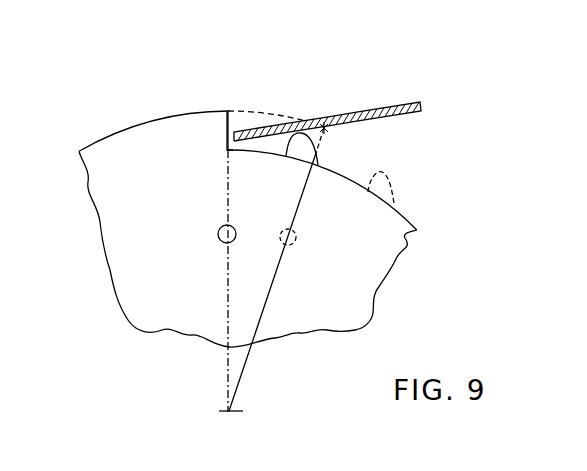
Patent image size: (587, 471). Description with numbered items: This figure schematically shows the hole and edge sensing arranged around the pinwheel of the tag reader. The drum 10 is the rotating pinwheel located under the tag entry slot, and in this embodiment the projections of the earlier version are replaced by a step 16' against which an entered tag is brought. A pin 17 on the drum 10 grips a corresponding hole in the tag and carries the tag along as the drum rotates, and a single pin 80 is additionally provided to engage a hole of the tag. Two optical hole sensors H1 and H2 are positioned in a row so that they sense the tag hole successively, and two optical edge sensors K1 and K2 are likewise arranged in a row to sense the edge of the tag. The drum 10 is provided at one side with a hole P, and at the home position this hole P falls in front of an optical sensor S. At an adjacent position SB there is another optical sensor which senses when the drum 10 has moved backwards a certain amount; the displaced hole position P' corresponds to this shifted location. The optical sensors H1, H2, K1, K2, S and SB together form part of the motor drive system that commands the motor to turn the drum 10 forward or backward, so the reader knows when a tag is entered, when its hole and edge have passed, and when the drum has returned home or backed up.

The drum 10 is at (103, 139).
The step 16' is at (238, 117).
The pin 17 is at (309, 145).
The pin 80 is at (391, 182).
The edge sensor K1 is at (371, 110).
The edge sensor K2 is at (250, 127).
The hole sensor H1 is at (340, 115).
The hole sensor H2 is at (321, 118).
The hole P is at (227, 215).
The displaced pivot point P' is at (306, 222).
The optical sensor S is at (219, 245).
The optical sensor position SB is at (291, 247).